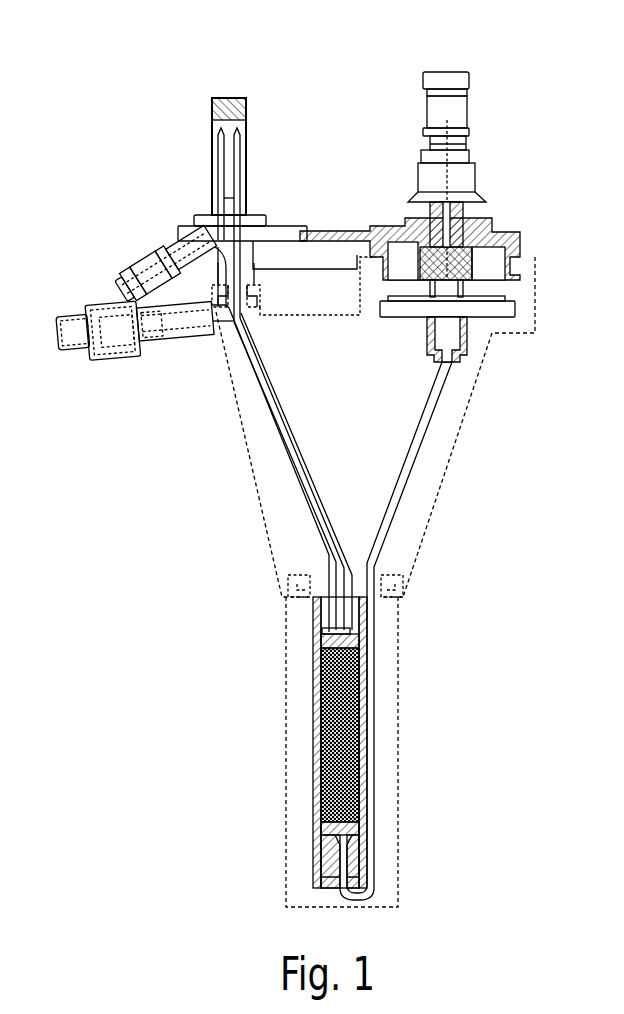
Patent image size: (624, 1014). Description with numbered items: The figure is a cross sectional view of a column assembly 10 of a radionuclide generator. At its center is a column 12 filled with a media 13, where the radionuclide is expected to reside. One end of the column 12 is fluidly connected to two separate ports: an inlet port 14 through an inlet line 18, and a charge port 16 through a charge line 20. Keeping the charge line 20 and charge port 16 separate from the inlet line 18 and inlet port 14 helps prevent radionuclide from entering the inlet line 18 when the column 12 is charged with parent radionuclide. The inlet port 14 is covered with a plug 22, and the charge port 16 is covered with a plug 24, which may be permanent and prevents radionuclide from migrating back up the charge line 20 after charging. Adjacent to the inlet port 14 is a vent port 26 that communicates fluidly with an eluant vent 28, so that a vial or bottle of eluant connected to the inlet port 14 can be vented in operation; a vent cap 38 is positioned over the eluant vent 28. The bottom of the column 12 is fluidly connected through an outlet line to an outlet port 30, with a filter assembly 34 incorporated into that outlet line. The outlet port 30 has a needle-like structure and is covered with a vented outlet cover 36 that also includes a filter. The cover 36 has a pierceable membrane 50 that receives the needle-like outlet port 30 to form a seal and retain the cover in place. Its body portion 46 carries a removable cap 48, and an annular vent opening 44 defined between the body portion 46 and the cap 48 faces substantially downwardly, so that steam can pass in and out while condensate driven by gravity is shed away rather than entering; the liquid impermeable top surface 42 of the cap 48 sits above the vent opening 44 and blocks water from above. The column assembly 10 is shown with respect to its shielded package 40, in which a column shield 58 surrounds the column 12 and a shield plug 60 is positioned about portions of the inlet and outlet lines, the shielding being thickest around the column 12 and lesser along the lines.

The column assembly 10 is at (473, 513).
The column 12 is at (437, 410).
The media 13 is at (355, 786).
The inlet port 14 is at (243, 150).
The charge port 16 is at (108, 335).
The inlet line 18 is at (268, 380).
The charge line 20 is at (273, 433).
The plug 22 is at (233, 98).
The plug 24 is at (75, 318).
The vent port 26 is at (216, 148).
The eluant vent 28 is at (150, 247).
The outlet port 30 is at (466, 147).
The filter assembly 34 is at (515, 312).
The vented outlet cover 36 is at (485, 172).
The vent cap 38 is at (132, 270).
The package 40 is at (390, 627).
The top surface 42 is at (448, 72).
The vent opening 44 is at (468, 97).
The body portion 46 is at (427, 133).
The removable cap 48 is at (424, 83).
The pierceable membrane 50 is at (476, 197).
The column shield 58 is at (393, 670).
The shield plug 60 is at (275, 570).